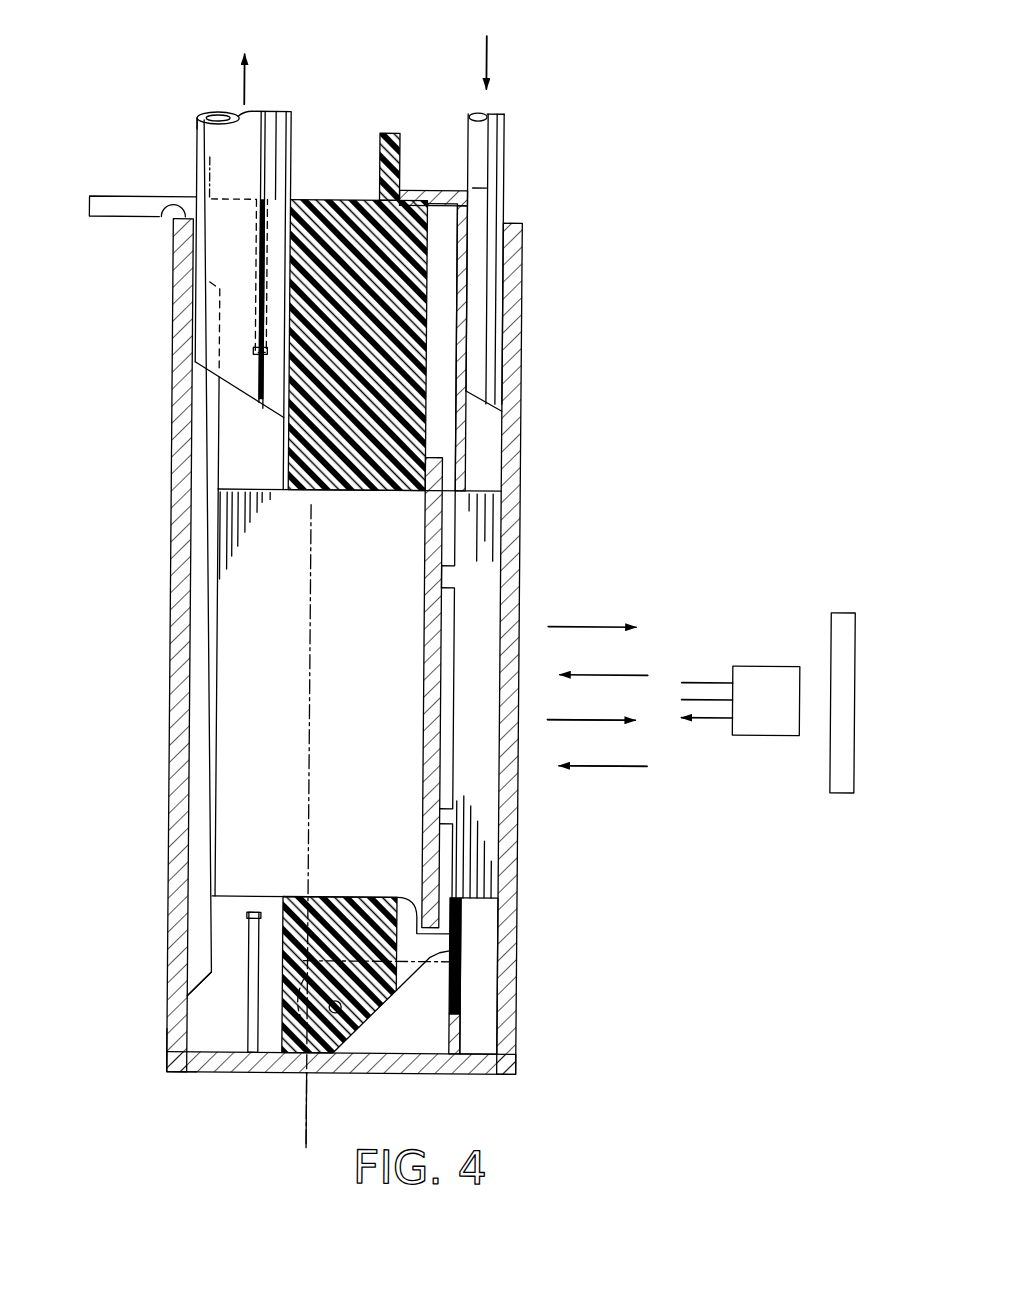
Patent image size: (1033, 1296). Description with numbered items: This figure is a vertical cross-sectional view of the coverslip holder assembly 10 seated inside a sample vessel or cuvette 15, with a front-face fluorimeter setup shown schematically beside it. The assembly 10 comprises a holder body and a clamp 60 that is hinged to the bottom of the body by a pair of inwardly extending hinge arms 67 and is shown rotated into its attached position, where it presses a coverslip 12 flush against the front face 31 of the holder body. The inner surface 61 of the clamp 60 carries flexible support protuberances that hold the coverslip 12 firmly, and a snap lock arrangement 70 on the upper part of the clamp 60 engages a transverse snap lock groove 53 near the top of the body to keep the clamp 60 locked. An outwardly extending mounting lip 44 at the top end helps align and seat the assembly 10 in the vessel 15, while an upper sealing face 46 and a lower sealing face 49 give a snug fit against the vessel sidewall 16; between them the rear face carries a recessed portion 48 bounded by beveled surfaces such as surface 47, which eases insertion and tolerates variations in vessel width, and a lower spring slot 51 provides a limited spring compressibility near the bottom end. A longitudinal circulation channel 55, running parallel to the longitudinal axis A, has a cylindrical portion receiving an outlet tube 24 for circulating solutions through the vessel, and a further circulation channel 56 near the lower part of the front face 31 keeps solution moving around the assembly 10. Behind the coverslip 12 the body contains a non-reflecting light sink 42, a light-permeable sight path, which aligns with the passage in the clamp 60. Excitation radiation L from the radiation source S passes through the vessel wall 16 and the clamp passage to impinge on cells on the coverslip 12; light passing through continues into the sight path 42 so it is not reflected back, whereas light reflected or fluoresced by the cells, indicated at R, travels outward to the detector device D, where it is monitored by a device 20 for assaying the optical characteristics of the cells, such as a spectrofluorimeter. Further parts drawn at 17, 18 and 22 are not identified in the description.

The coverslip holder assembly 10 is at (176, 180).
The coverslip 12 is at (424, 540).
The sample vessel 15 is at (545, 296).
The sidewall 16 is at (369, 672).
The housing bottom wall 17 is at (463, 1069).
The fastening pin 18 is at (157, 219).
The device for assaying optical characteristics of cells 20 is at (656, 474).
The inlet tube 22 is at (498, 134).
The outlet tube 24 is at (204, 143).
The front face 31 is at (427, 362).
The non-reflecting light sink 42 is at (229, 721).
The mounting lip 44 is at (110, 205).
The upper sealing face 46 is at (197, 274).
The beveled surface 47 is at (192, 302).
The recessed portion 48 is at (204, 802).
The lower sealing face 49 is at (178, 1030).
The lower spring slot 51 is at (245, 941).
The snap lock groove 53 is at (394, 159).
The circulation channel 55 is at (232, 434).
The further circulation channel 56 is at (412, 913).
The clamp 60 is at (406, 92).
The inner surface 61 is at (441, 628).
The hinge arms 67 is at (354, 975).
The snap lock means 70 is at (356, 184).
The longitudinal axis A is at (304, 1128).
The detector device D is at (842, 611).
The excitation radiation L is at (616, 766).
The reflected light R is at (598, 722).
The radiation source S is at (782, 677).